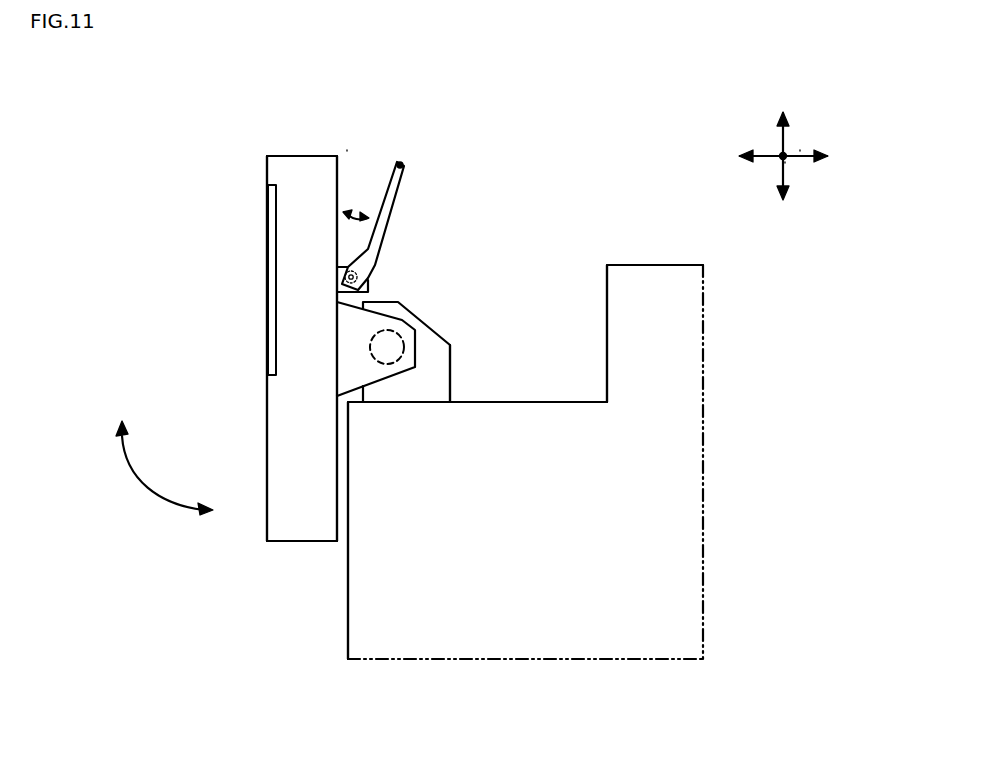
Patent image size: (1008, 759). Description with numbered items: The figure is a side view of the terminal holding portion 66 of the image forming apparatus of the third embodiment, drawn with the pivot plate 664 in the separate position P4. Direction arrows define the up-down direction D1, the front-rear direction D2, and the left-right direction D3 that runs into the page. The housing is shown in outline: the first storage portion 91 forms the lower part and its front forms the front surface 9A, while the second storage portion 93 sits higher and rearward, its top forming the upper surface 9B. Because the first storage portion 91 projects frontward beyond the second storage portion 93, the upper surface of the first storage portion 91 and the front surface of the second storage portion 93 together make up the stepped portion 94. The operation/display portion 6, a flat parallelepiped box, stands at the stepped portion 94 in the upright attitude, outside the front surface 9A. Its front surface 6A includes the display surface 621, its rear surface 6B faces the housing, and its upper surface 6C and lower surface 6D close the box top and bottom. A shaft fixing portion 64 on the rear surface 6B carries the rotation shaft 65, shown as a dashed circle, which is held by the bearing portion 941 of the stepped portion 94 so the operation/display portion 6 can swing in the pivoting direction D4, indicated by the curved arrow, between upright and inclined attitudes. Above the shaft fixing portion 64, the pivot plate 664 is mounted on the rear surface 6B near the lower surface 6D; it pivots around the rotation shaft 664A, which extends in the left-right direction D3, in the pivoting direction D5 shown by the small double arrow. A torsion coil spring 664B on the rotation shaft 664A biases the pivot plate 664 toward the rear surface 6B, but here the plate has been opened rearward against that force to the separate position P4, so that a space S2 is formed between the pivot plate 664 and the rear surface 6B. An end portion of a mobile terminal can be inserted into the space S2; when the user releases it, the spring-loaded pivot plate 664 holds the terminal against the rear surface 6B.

The operation/display portion 6 is at (296, 327).
The front surface 6A is at (267, 428).
The rear surface 6B is at (337, 498).
The upper surface 6C is at (287, 156).
The lower surface 6D is at (284, 541).
The display surface 621 is at (268, 200).
The shaft fixing portion 64 is at (413, 370).
The rotation shaft 65 is at (393, 364).
The terminal holding portion 66 is at (409, 164).
The pivot plate 664 is at (398, 212).
The rotation shaft 664A is at (366, 285).
The torsion coil spring 664B is at (369, 291).
The first storage portion 91 is at (341, 580).
The second storage portion 93 is at (599, 313).
The stepped portion 94 is at (449, 314).
The bearing portion 941 is at (451, 370).
The front surface 9A is at (482, 530).
The upper surface 9B is at (611, 429).
The separate position P4 is at (400, 165).
The space S2 is at (348, 150).
The up-down direction D1 is at (780, 137).
The front-rear direction D2 is at (800, 150).
The left-right direction D3 is at (785, 162).
The pivoting direction D4 is at (145, 488).
The pivoting direction D5 is at (355, 209).